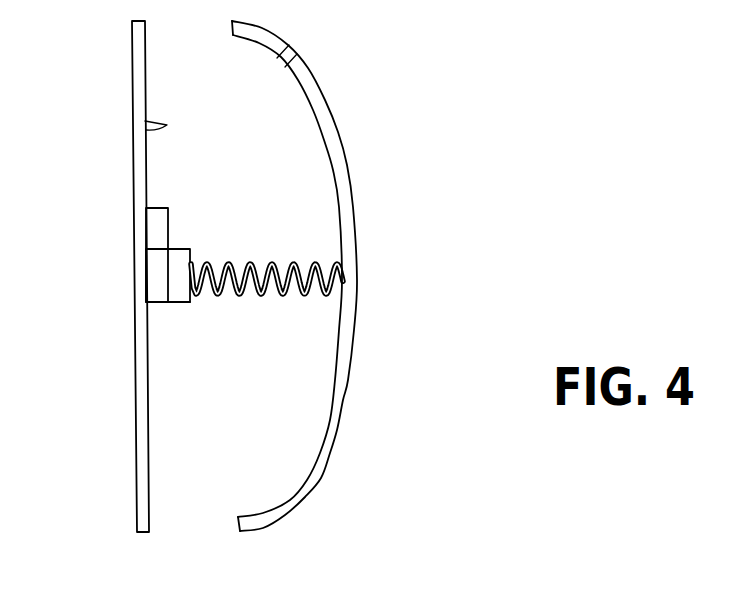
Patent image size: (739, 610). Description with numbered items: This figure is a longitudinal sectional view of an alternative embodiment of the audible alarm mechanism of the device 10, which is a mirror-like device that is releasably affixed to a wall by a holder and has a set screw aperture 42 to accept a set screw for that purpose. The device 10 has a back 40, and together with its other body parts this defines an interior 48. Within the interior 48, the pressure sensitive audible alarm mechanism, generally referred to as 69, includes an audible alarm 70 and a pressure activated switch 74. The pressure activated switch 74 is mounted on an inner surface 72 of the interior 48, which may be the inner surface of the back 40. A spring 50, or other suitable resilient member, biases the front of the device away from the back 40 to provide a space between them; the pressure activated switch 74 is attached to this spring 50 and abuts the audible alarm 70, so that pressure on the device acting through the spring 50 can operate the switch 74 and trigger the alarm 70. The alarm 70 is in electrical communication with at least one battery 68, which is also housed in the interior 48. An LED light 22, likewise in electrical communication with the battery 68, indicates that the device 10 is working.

The device 10 is at (438, 172).
The LED light 22 is at (292, 52).
The back 40 is at (143, 418).
The set screw aperture 42 is at (358, 272).
The interior 48 is at (308, 340).
The spring 50 is at (312, 262).
The battery 68 is at (155, 229).
The pressure sensitive audible alarm mechanism 69 is at (58, 267).
The audible alarm 70 is at (157, 278).
The inner surface 72 is at (145, 121).
The pressure activated switch 74 is at (178, 300).